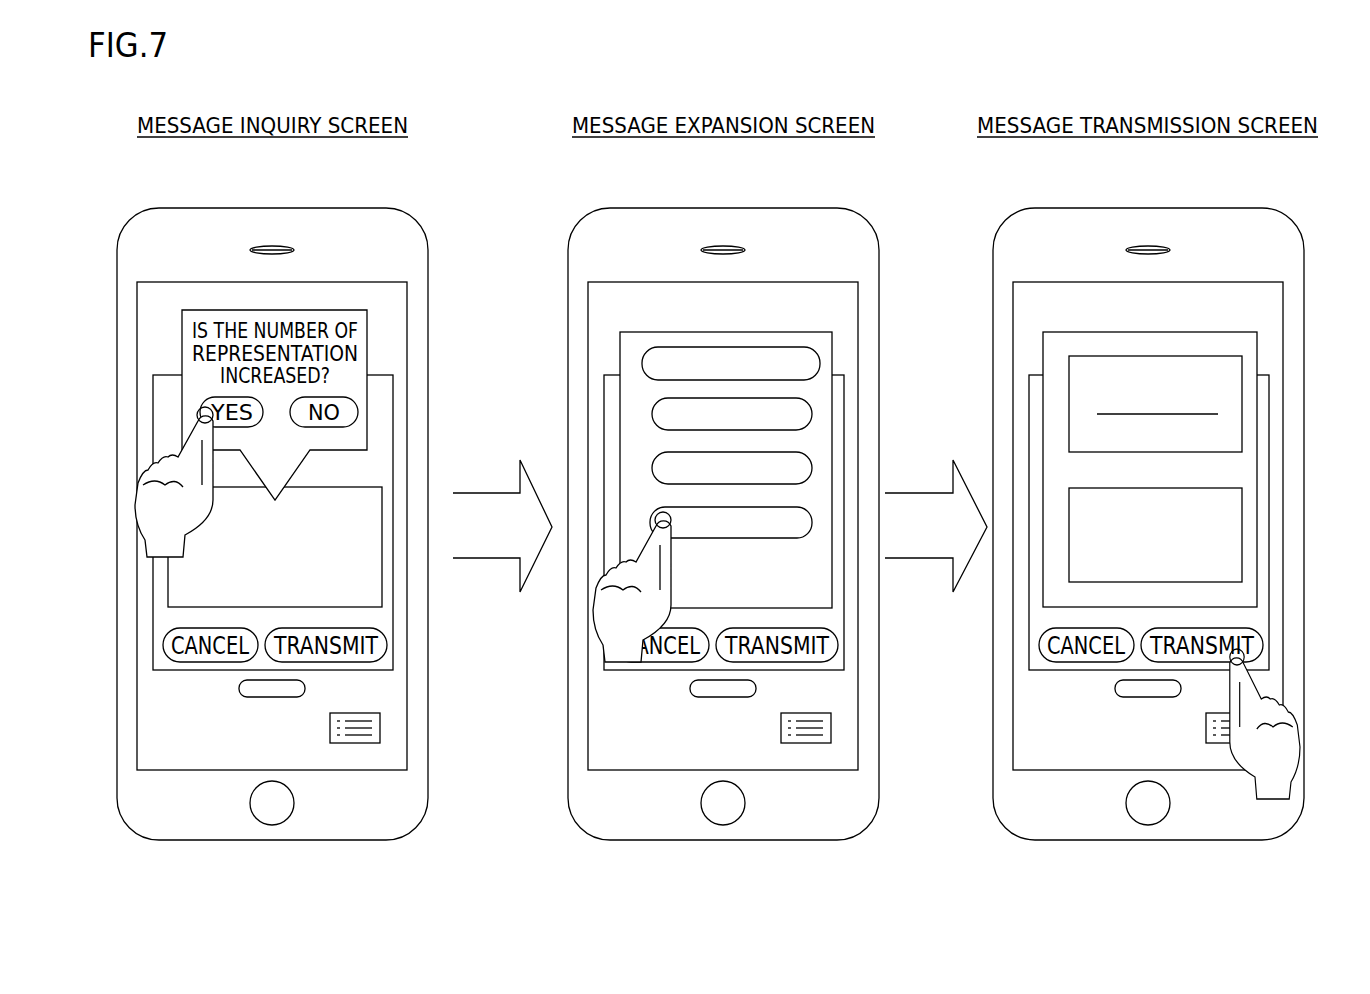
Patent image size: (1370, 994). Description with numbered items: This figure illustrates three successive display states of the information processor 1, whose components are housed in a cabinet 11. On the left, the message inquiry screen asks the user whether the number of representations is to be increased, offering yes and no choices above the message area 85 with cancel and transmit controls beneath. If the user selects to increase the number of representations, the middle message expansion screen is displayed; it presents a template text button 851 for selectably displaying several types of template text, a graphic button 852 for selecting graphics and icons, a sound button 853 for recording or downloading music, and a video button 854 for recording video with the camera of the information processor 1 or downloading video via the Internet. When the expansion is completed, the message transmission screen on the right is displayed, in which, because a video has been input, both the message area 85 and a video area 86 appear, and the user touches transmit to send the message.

The information processor 1 is at (434, 221).
The cabinet 11 is at (290, 210).
The message area 85 is at (382, 590).
The template text button 851 is at (820, 360).
The graphic button 852 is at (812, 410).
The sound button 853 is at (812, 464).
The video button 854 is at (802, 505).
The video area 86 is at (1242, 375).